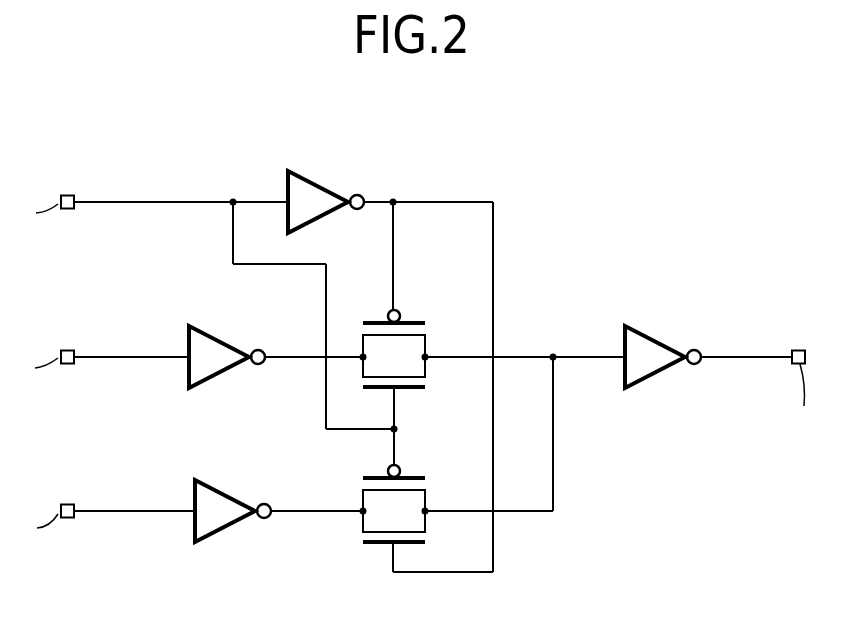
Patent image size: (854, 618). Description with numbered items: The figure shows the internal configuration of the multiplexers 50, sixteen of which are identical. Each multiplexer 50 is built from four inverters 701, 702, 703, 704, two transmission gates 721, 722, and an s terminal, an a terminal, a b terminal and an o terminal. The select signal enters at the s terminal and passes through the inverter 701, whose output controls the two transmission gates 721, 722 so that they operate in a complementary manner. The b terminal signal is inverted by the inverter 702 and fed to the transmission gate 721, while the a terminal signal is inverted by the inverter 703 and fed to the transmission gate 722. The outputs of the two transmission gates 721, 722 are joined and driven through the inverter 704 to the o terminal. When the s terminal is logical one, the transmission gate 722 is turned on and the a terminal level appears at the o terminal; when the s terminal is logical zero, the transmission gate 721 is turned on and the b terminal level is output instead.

The multiplexer 50 is at (684, 167).
The inverter 701 is at (313, 188).
The inverter 702 is at (218, 333).
The inverter 703 is at (223, 497).
The inverter 704 is at (655, 373).
The transmission gate 721 is at (420, 322).
The transmission gate 722 is at (420, 477).